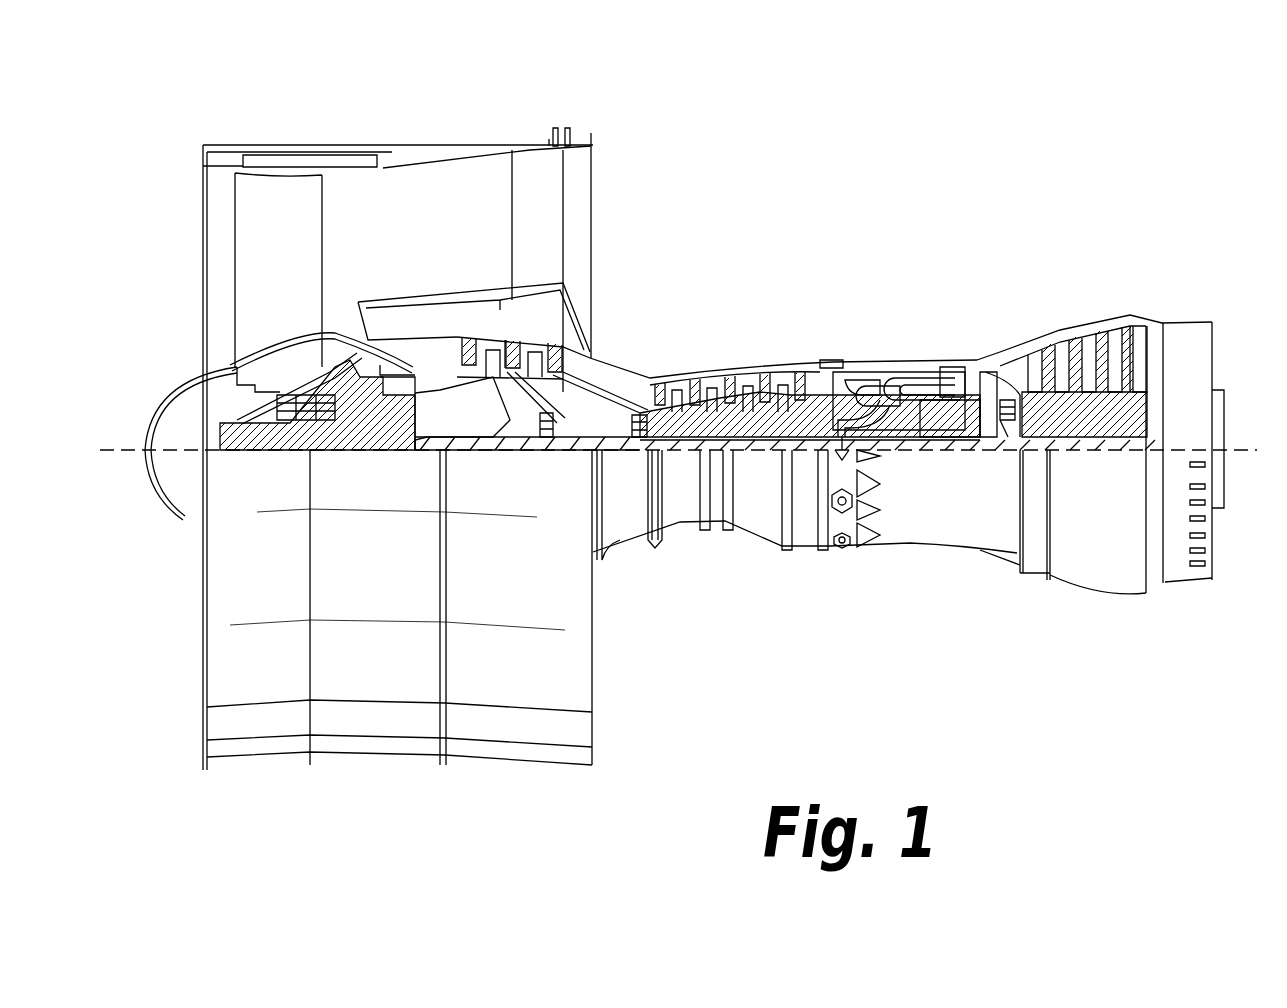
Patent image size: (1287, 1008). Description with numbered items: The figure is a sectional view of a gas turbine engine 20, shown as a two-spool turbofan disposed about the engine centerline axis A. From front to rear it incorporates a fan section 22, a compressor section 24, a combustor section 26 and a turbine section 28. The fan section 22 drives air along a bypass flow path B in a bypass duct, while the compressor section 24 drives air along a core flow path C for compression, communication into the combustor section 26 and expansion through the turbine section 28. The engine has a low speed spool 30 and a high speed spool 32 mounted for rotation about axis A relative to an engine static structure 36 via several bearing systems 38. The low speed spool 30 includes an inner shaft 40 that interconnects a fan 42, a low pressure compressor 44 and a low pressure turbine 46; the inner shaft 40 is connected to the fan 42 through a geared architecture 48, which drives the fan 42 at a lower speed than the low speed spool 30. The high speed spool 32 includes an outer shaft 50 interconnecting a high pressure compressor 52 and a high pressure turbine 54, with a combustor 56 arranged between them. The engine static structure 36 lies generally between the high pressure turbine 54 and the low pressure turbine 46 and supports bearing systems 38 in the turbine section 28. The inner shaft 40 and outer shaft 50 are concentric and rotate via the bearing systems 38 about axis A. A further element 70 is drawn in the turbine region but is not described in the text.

The gas turbine engine 20 is at (1009, 166).
The fan section 22 is at (420, 114).
The compressor section 24 is at (433, 260).
The combustor section 26 is at (863, 256).
The turbine section 28 is at (1168, 262).
The low speed spool 30 is at (770, 457).
The high speed spool 32 is at (818, 412).
The engine static structure 36 is at (802, 550).
The bearing systems 38 is at (283, 425).
The inner shaft 40 is at (611, 452).
The fan 42 is at (258, 270).
The low pressure compressor 44 is at (521, 340).
The low pressure turbine 46 is at (1087, 335).
The geared architecture 48 is at (405, 427).
The outer shaft 50 is at (913, 428).
The high pressure compressor 52 is at (717, 407).
The high pressure turbine 54 is at (953, 370).
The combustor 56 is at (877, 383).
The mid-turbine frame 70 is at (1123, 395).